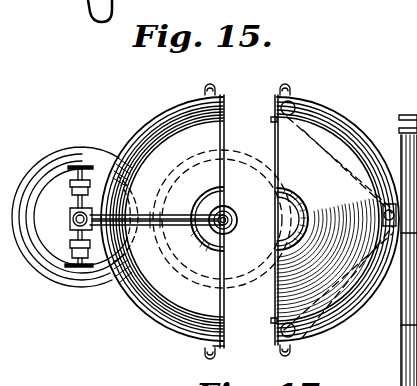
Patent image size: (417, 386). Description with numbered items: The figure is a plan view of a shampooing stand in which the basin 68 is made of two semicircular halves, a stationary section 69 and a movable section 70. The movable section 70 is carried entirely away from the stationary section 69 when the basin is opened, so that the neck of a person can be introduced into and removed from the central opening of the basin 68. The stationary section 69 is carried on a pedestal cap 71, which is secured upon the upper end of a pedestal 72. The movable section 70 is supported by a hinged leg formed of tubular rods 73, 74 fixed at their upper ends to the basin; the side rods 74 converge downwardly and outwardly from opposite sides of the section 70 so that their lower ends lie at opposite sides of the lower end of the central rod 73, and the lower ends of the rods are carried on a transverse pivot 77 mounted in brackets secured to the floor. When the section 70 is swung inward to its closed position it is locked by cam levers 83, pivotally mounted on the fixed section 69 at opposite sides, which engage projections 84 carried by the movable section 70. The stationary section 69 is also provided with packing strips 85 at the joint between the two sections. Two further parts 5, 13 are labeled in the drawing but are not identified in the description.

The shaft 5 is at (229, 224).
The hub 13 is at (249, 211).
The basin 68 is at (152, 300).
The stationary section 69 is at (222, 215).
The movable section 70 is at (335, 220).
The pedestal cap 71 is at (416, 112).
The pedestal 72 is at (35, 164).
The tubular rod 73 is at (383, 214).
The tubular rods 74 is at (306, 120).
The transverse pivot 77 is at (58, 248).
The cam levers 83 is at (205, 351).
The projections 84 is at (286, 350).
The packing strips 85 is at (226, 302).